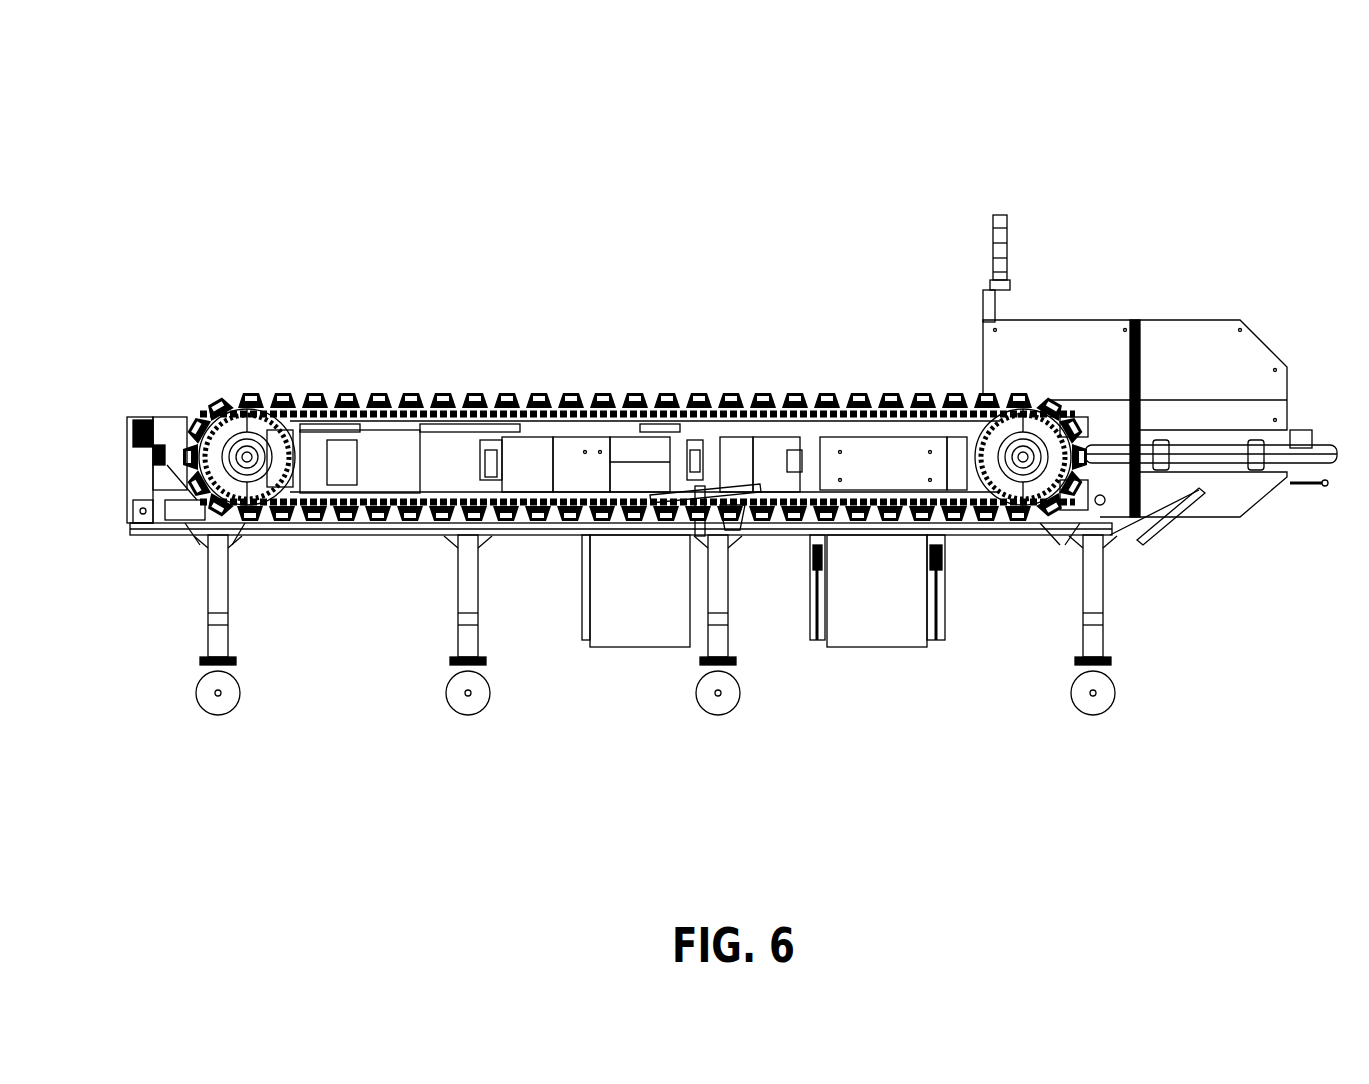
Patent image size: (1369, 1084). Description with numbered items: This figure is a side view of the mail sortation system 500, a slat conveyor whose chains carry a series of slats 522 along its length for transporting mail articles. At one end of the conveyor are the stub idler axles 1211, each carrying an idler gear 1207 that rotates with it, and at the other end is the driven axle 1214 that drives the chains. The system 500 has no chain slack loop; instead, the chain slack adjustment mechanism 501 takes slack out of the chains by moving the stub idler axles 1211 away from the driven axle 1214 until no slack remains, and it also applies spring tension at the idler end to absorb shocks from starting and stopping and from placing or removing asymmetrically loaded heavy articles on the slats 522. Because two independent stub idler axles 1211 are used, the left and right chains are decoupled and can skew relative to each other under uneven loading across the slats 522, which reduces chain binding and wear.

The mail sortation system 500 is at (932, 128).
The chain slack adjustment mechanism 501 is at (197, 407).
The idler gear 1207 is at (277, 393).
The slats 522 is at (488, 397).
The stub idler axles 1211 is at (212, 510).
The driven axle 1214 is at (1037, 525).